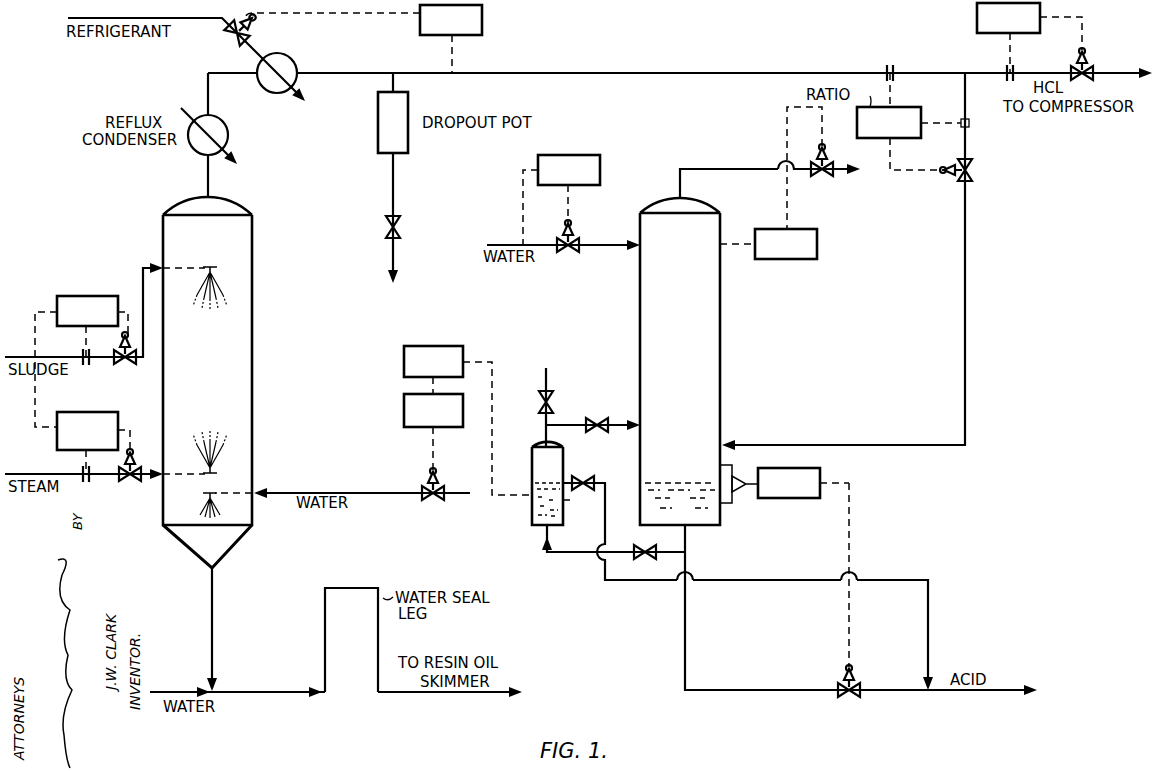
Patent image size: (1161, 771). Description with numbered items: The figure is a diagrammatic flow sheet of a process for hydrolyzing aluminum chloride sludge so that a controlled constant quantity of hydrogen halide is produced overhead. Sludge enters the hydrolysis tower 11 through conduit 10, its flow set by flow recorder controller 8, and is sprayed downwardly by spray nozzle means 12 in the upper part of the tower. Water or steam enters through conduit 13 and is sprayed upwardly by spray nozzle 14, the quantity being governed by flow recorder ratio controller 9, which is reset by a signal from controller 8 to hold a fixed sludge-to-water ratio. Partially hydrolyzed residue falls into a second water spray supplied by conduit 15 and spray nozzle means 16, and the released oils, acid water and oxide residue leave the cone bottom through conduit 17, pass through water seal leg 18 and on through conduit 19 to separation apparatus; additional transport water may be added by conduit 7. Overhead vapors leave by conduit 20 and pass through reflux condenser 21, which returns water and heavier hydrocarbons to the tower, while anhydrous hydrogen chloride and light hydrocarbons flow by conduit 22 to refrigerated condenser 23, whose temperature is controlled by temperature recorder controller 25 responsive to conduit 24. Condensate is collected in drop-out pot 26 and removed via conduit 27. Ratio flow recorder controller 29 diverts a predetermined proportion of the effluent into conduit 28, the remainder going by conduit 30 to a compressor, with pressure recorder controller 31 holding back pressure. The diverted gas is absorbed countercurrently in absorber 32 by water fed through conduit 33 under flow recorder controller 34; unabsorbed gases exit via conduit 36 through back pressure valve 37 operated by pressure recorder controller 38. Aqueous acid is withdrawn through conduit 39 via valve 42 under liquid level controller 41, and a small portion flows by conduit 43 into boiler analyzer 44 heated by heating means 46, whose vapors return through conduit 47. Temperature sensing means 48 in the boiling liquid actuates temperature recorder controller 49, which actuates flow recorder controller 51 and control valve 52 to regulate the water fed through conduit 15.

The conduit 7 is at (167, 692).
The flow recorder controller 8 is at (86, 296).
The flow recorder ratio controller 9 is at (118, 412).
The conduit 10 is at (143, 277).
The hydrolysis tower 11 is at (252, 350).
The spray nozzle means 12 is at (217, 267).
The conduit 13 is at (110, 475).
The spray nozzle 14 is at (217, 472).
The conduit 15 is at (296, 493).
The spray nozzle means 16 is at (204, 494).
The conduit 17 is at (213, 607).
The water seal leg 18 is at (345, 588).
The conduit 19 is at (430, 692).
The conduit 20 is at (208, 171).
The reflux condenser 21 is at (228, 131).
The conduit 22 is at (208, 96).
The refrigerated condenser 23 is at (298, 58).
The conduit 24 is at (615, 73).
The temperature recorder controller 25 is at (482, 20).
The drop-out pot 26 is at (378, 130).
The conduit 27 is at (393, 186).
The conduit 28 is at (965, 257).
The ratio flow recorder controller 29 is at (917, 107).
The conduit 30 is at (1100, 73).
The pressure recorder controller 31 is at (977, 17).
The absorber 32 is at (720, 355).
The conduit 33 is at (594, 245).
The flow recorder controller 34 is at (585, 155).
The conduit 36 is at (728, 169).
The back pressure valve 37 is at (826, 180).
The pressure recorder controller 38 is at (817, 252).
The conduit 39 is at (685, 652).
The liquid level controller 41 is at (792, 498).
The valve 42 is at (852, 700).
The conduit 43 is at (575, 552).
The boiler analyzer 44 is at (563, 463).
The heating means 46 is at (563, 511).
The conduit 47 is at (608, 425).
The temperature sensing means 48 is at (532, 500).
The temperature recorder controller 49 is at (404, 357).
The flow recorder controller 51 is at (404, 415).
The control valve 52 is at (433, 505).